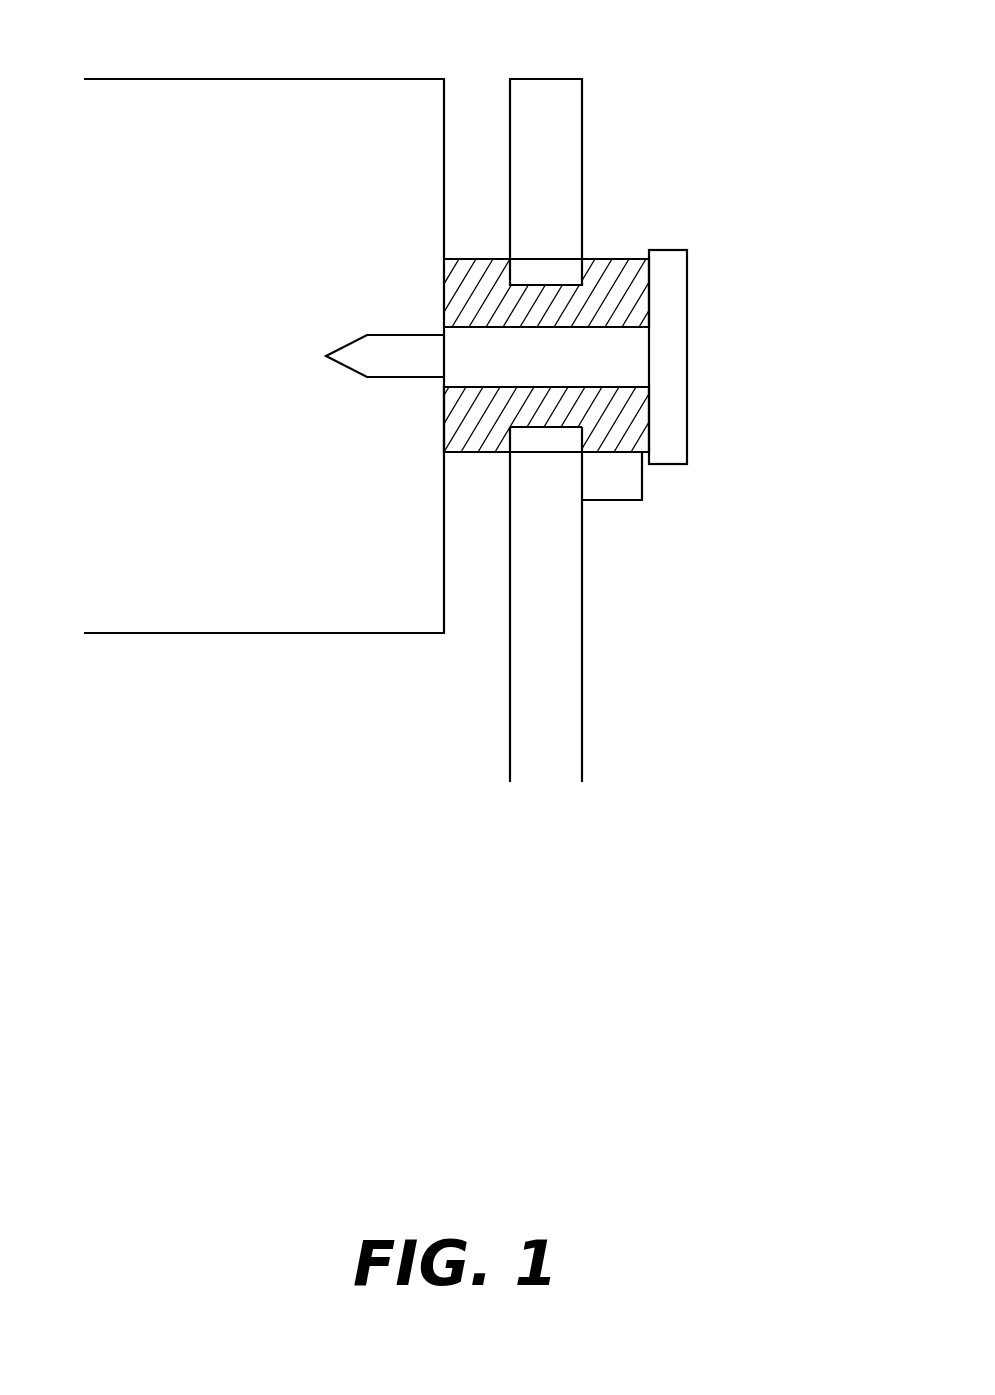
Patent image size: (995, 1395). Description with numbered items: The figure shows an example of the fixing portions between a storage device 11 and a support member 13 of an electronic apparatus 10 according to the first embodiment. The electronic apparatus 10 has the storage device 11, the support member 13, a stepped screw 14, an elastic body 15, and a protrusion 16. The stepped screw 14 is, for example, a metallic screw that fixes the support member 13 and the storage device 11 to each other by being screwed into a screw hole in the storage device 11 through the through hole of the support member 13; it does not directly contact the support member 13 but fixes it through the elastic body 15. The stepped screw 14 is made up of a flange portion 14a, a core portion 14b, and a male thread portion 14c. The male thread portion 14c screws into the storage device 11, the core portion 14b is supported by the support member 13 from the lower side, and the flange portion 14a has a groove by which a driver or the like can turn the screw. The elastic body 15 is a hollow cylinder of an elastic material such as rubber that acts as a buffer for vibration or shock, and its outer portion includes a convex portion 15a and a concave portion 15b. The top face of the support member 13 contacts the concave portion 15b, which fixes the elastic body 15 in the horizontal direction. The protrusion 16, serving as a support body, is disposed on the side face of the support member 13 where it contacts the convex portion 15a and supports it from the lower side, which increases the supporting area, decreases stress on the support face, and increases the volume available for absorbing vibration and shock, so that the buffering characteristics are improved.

The electronic apparatus 10 is at (400, 920).
The storage device 11 is at (236, 79).
The support member 13 is at (545, 79).
The stepped screw 14 is at (707, 308).
The flange portion 14a is at (689, 408).
The core portion 14b is at (600, 317).
The male thread portion 14c is at (412, 332).
The elastic body 15 is at (603, 252).
The convex portion 15a is at (477, 453).
The concave portion 15b is at (527, 428).
The protrusion 16 is at (618, 502).